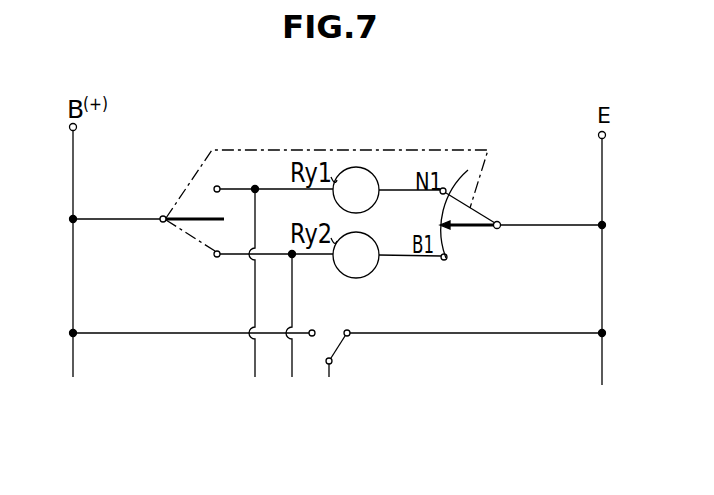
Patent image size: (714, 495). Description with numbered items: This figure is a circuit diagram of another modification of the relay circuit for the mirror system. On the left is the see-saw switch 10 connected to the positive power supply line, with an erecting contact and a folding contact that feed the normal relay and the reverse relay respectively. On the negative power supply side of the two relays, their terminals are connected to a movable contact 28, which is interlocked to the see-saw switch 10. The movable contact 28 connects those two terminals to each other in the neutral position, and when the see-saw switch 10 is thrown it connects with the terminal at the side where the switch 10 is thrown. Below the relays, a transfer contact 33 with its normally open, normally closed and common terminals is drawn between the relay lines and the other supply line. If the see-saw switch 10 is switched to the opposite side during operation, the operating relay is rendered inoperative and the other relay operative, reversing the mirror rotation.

The see-saw switch 10 is at (186, 223).
The movable contact 28 is at (455, 228).
The transfer contact 33 is at (348, 348).